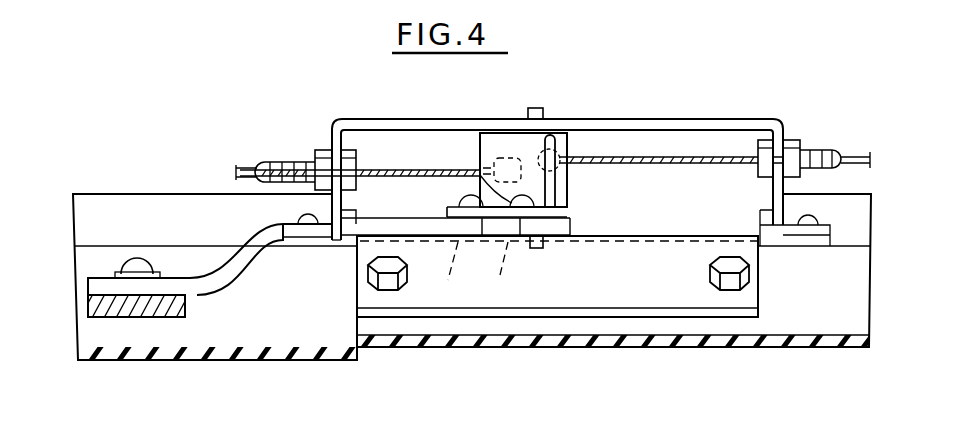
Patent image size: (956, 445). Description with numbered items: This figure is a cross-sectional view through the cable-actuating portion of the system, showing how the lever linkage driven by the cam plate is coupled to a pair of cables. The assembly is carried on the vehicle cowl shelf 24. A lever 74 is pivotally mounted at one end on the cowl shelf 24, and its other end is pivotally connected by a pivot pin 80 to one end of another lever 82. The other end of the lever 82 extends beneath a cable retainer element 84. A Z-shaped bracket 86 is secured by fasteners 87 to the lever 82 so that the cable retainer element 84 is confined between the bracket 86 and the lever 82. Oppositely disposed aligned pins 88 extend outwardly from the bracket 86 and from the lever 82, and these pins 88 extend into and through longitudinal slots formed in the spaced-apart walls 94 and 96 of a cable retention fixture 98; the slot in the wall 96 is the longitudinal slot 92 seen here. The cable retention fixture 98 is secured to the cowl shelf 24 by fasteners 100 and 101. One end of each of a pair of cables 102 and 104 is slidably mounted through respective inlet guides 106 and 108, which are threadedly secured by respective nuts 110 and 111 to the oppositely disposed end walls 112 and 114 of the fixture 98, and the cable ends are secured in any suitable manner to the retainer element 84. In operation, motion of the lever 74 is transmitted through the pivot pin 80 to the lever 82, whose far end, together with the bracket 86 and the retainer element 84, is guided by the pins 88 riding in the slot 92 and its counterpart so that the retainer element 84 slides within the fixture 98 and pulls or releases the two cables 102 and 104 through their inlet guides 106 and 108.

The vehicle cowl shelf 24 is at (812, 318).
The lever 74 is at (187, 303).
The pivot pin 80 is at (134, 265).
The lever 82 is at (236, 248).
The cable retainer element 84 is at (568, 202).
The Z-shaped bracket 86 is at (532, 182).
The fasteners 87 is at (474, 165).
The pins 88 is at (545, 118).
The longitudinal slot 92 is at (494, 275).
The wall 94 is at (648, 118).
The wall 96 is at (444, 275).
The cable retention fixture 98 is at (361, 109).
The fastener 100 is at (304, 234).
The fastener 101 is at (368, 269).
The cable 102 is at (385, 168).
The cable 104 is at (667, 161).
The inlet guide 106 is at (277, 163).
The inlet guide 108 is at (821, 149).
The nut 110 is at (336, 194).
The nut 111 is at (770, 184).
The end wall 112 is at (330, 138).
The end wall 114 is at (786, 132).